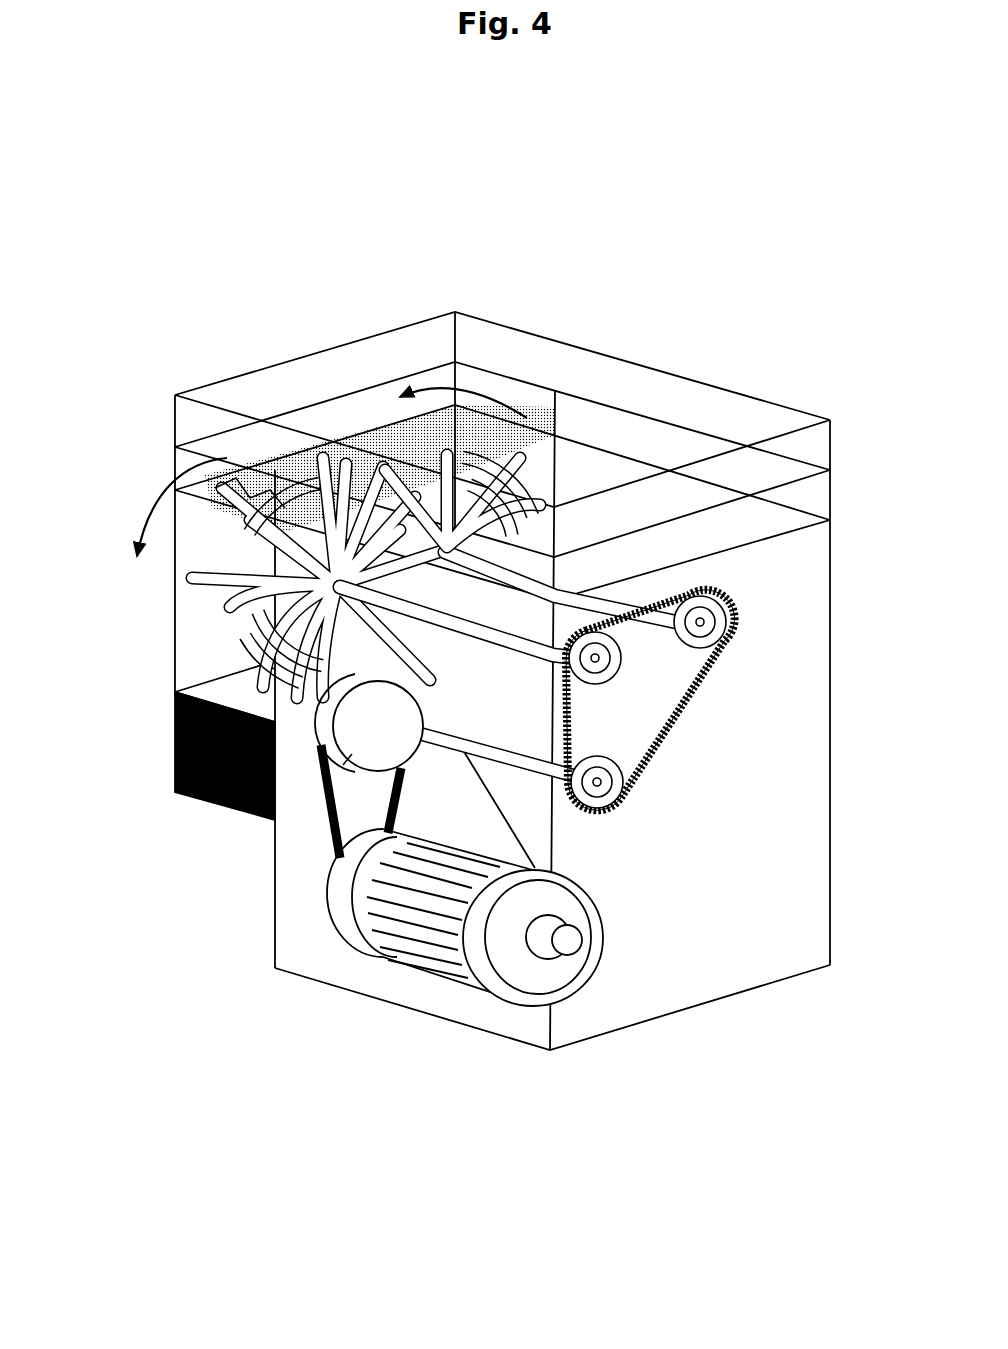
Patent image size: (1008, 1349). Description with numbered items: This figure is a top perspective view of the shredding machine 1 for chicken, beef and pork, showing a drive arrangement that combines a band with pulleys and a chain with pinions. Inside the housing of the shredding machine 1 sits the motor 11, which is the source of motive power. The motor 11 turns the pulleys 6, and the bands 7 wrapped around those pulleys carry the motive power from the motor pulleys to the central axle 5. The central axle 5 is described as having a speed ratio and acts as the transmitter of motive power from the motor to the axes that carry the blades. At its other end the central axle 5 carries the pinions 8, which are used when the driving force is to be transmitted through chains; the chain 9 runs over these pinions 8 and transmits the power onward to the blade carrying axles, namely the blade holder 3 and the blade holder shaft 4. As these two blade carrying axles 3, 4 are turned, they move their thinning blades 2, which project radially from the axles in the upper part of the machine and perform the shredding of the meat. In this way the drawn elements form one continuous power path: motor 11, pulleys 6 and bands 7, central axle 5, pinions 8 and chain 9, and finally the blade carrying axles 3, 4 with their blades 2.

The shredding machine 1 is at (735, 185).
The thinning blades 2 is at (198, 592).
The blade holder 3 is at (553, 582).
The blade holder shaft 4 is at (481, 625).
The central axle 5 is at (572, 955).
The pulleys 6 is at (325, 785).
The bands 7 is at (357, 756).
The pinions 8 is at (603, 800).
The chain 9 is at (655, 768).
The motor 11 is at (530, 990).